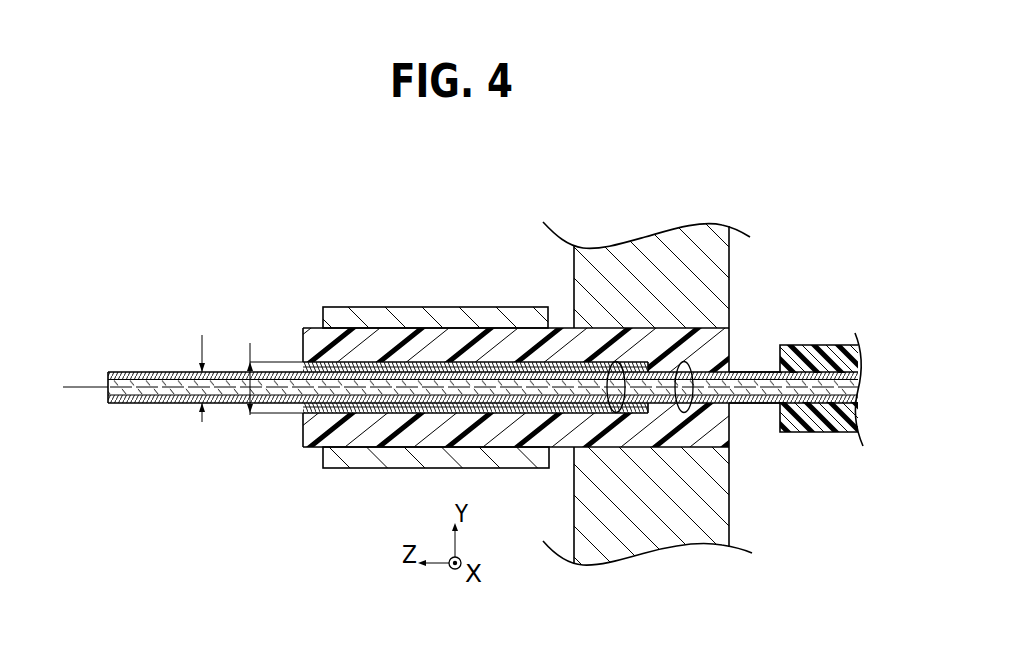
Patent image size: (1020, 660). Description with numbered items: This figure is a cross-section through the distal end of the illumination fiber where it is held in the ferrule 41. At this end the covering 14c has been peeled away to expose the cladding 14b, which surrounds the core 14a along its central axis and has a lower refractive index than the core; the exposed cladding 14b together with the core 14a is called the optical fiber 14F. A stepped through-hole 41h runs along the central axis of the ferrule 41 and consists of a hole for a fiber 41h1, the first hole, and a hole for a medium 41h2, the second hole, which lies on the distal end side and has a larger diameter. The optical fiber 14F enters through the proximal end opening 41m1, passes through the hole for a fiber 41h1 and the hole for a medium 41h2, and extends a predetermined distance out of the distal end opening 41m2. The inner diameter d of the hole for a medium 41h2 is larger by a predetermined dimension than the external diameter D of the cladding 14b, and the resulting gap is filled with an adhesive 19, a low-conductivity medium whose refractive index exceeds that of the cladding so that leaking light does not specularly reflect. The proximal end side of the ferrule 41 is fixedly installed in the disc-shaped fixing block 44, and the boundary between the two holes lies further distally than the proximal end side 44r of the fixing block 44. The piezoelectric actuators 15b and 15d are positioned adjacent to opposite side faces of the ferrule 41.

The optical fiber 14F is at (460, 311).
The core 14a is at (108, 384).
The cladding 14b is at (153, 373).
The covering 14c is at (817, 357).
The actuator 15b is at (345, 315).
The actuator 15d is at (343, 460).
The adhesive 19 is at (478, 362).
The ferrule 41 is at (511, 431).
The stepped through-hole 41h is at (520, 498).
The hole for a fiber 41h1 is at (693, 411).
The hole for a medium 41h2 is at (607, 411).
The proximal end opening 41m1 is at (739, 382).
The distal end opening 41m2 is at (288, 402).
The fixing block 44 is at (626, 352).
The proximal end side 44r is at (737, 262).
The external diameter D is at (209, 378).
The inner diameter d is at (267, 379).